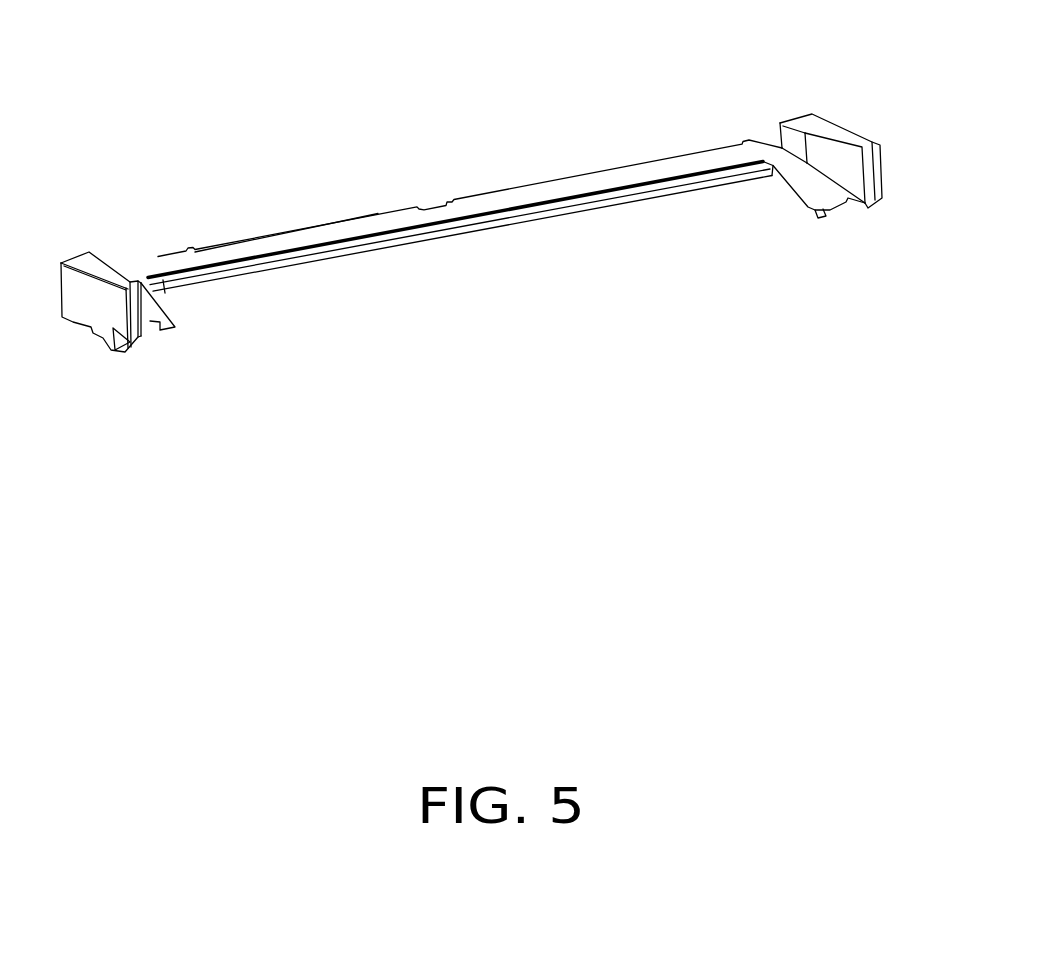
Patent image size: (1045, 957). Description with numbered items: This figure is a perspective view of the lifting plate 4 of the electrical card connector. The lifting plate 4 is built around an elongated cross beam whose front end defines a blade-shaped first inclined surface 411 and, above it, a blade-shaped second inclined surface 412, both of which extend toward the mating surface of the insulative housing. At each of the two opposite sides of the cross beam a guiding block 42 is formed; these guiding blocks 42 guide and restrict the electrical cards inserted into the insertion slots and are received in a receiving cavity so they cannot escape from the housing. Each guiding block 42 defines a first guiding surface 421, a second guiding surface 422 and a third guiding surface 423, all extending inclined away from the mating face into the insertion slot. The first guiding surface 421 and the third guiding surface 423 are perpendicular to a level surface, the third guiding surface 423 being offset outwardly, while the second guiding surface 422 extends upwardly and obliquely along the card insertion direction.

The lifting plate 4 is at (475, 179).
The first inclined surface 411 is at (527, 223).
The second inclined surface 412 is at (578, 202).
The guiding block 42 is at (794, 164).
The first guiding surface 421 is at (783, 195).
The second guiding surface 422 is at (810, 183).
The third guiding surface 423 is at (840, 167).